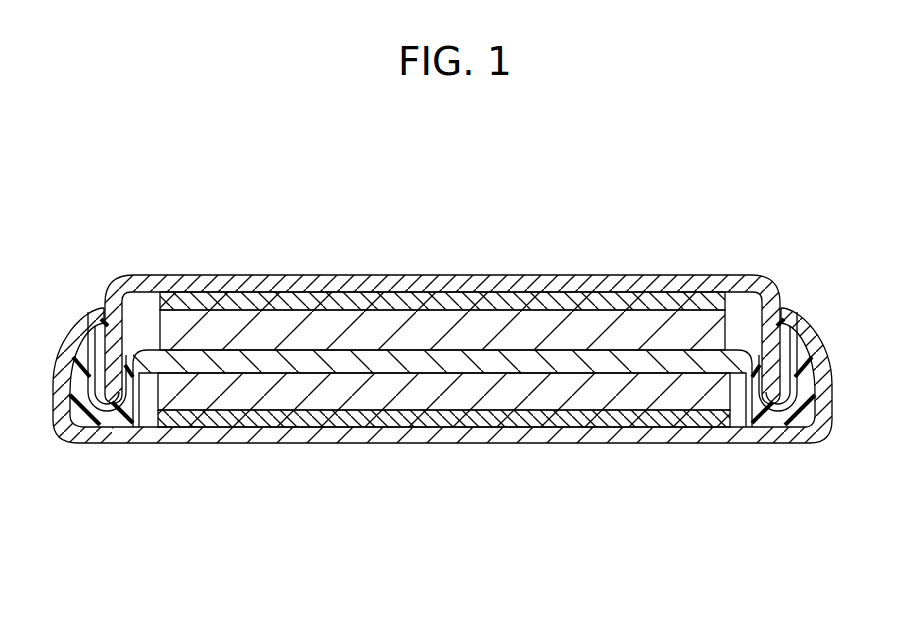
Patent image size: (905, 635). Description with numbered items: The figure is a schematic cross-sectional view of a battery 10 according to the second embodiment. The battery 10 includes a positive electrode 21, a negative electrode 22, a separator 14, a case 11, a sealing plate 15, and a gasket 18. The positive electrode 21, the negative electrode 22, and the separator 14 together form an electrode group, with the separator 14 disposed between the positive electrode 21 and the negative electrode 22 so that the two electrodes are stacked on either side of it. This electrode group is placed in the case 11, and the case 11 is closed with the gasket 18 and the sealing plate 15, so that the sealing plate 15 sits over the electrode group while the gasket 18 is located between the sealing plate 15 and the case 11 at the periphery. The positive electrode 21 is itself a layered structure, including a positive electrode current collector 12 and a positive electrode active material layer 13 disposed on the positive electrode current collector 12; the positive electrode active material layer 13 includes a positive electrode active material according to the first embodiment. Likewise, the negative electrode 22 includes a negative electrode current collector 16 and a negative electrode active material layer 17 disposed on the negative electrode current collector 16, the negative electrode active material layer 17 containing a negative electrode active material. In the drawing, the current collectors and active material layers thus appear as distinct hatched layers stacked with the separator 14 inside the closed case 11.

The battery 10 is at (703, 176).
The case 11 is at (203, 433).
The positive electrode current collector 12 is at (390, 418).
The positive electrode active material layer 13 is at (585, 397).
The separator 14 is at (658, 363).
The sealing plate 15 is at (178, 285).
The negative electrode current collector 16 is at (525, 302).
The negative electrode active material layer 17 is at (327, 328).
The gasket 18 is at (792, 420).
The positive electrode 21 is at (533, 575).
The negative electrode 22 is at (358, 181).